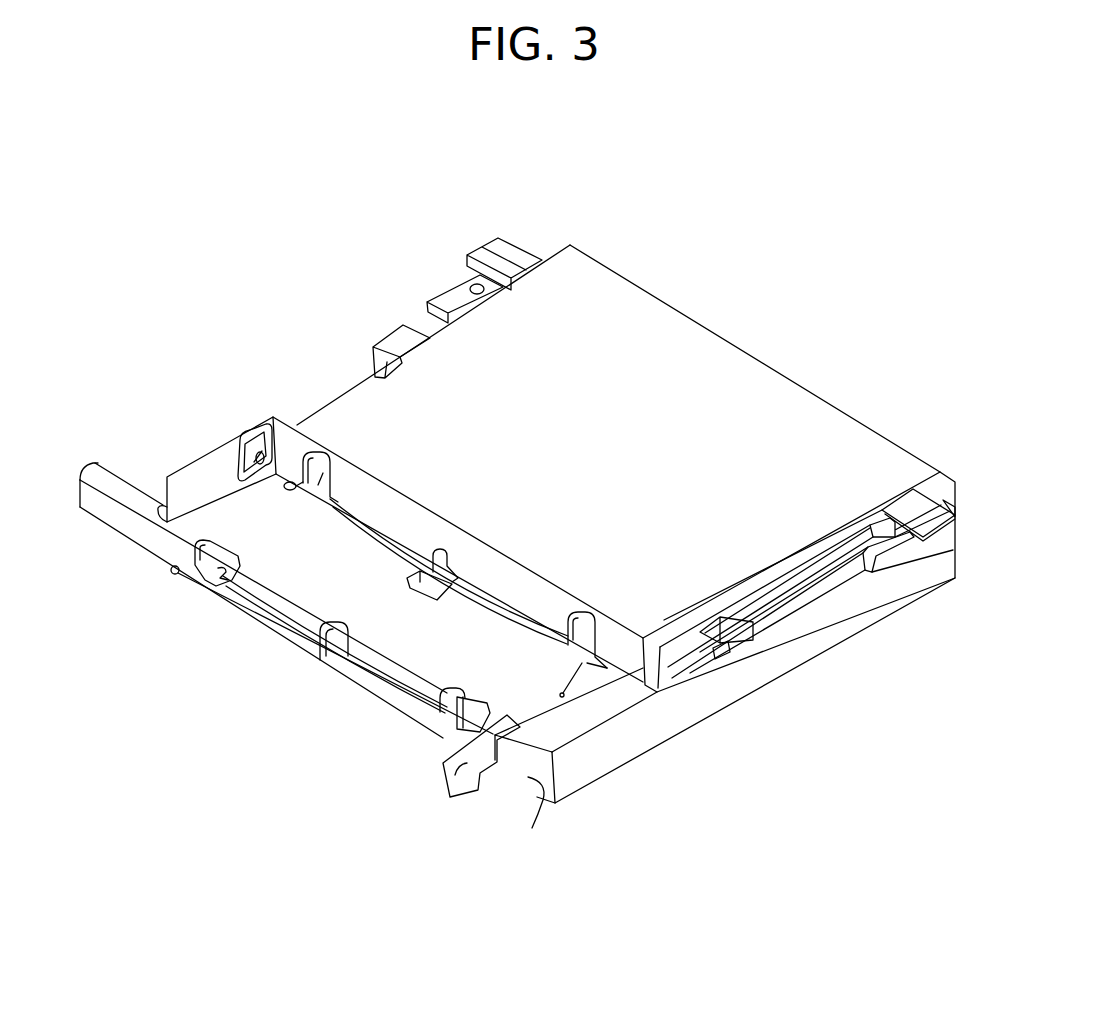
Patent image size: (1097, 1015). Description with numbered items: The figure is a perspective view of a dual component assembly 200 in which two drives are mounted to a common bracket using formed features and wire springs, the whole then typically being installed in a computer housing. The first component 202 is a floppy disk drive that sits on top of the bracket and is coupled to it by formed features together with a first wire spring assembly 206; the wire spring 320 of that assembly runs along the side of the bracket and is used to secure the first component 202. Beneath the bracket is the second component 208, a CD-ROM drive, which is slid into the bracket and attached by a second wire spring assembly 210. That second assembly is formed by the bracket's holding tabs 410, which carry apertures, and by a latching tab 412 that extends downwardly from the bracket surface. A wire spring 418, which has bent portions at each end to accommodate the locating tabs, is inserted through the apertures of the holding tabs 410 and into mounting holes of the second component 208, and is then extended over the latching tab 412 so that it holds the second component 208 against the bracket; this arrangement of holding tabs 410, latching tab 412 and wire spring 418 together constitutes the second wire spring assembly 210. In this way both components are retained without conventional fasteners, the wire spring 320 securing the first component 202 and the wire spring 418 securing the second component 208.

The dual component assembly 200 is at (551, 151).
The first component 202 is at (710, 380).
The first wire spring assembly 206 is at (453, 600).
The second component 208 is at (667, 743).
The second wire spring assembly 210 is at (347, 680).
The wire spring 320 is at (383, 548).
The holding tabs 410 is at (238, 563).
The latching tab 412 is at (317, 660).
The wire spring 418 is at (270, 630).